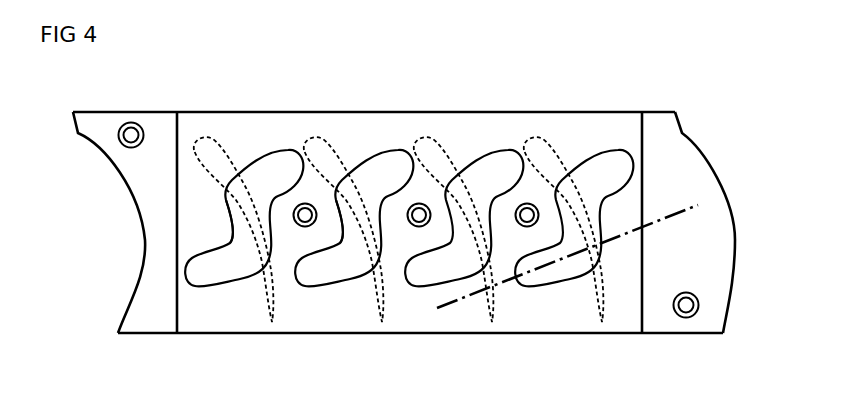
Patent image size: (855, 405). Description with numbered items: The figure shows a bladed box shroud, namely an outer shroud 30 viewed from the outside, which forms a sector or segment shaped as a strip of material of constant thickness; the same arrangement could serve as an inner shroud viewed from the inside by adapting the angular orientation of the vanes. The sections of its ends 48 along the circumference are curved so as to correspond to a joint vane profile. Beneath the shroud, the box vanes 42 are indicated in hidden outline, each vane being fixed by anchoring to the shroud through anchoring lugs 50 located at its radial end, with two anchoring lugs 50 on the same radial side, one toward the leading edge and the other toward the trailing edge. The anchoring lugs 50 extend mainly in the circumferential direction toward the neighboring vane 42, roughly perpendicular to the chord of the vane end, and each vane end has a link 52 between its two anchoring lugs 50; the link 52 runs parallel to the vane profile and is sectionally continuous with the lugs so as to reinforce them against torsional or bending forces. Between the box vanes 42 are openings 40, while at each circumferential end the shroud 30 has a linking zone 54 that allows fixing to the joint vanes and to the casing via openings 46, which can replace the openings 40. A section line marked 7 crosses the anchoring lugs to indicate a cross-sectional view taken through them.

The outer shroud 30 is at (405, 99).
The openings 40 is at (413, 223).
The box vane 42 is at (220, 160).
The openings 46 is at (132, 122).
The ends 48 is at (133, 187).
The anchoring lug 50 is at (286, 163).
The link 52 is at (247, 232).
The linking zones 54 is at (148, 298).
The section line 7- 7 is at (453, 305).